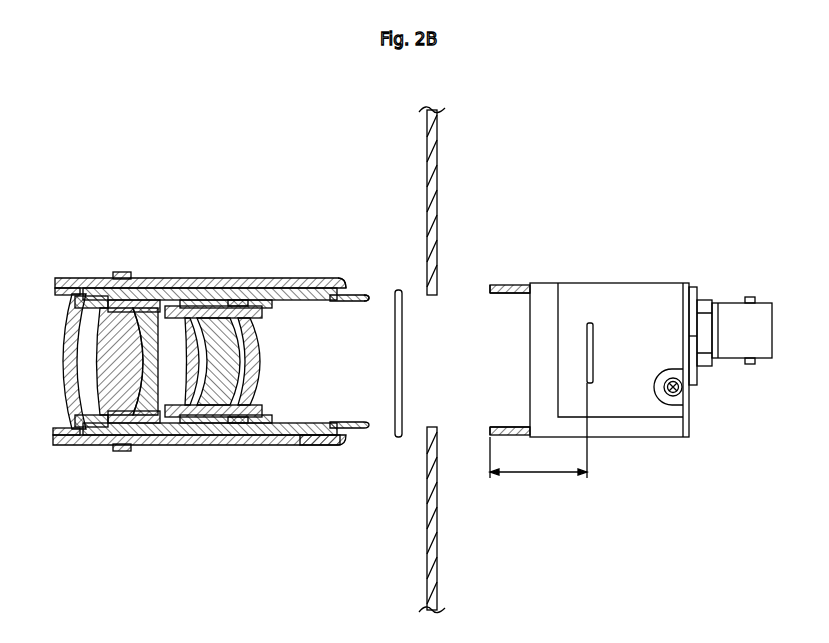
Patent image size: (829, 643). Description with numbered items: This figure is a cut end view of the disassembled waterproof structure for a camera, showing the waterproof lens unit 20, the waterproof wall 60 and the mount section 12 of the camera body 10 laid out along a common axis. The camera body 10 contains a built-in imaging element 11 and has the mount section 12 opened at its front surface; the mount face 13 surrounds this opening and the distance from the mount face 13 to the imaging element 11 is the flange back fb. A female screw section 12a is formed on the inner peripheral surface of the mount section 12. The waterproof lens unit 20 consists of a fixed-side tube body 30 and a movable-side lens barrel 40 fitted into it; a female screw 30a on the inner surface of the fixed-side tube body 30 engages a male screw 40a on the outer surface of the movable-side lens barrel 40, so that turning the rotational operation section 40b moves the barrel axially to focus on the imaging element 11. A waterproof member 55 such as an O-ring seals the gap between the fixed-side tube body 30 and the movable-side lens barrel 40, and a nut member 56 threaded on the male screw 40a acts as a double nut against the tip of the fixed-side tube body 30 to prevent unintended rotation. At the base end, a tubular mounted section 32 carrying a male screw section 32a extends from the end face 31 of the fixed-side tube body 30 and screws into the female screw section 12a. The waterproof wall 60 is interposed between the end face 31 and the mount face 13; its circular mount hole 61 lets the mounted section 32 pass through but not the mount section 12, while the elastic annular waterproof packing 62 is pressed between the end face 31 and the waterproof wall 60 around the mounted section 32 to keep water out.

The camera body 10 is at (636, 280).
The imaging element 11 is at (597, 353).
The mount section 12 is at (519, 289).
The female screw section 12a is at (518, 295).
The mount face 13 is at (490, 288).
The waterproof lens unit 20 is at (252, 270).
The fixed-side tube body 30 is at (186, 279).
The female screw 30a is at (315, 433).
The end face 31 is at (352, 286).
The mounted section 32 is at (350, 301).
The male screw section 32a is at (372, 292).
The movable-side lens barrel 40 is at (190, 445).
The male screw 40a is at (212, 445).
The rotational operation section 40b is at (95, 445).
The waterproof member 55 is at (236, 279).
The nut member 56 is at (122, 276).
The waterproof wall 60 is at (437, 150).
The mount hole 61 is at (433, 352).
The waterproof packing 62 is at (398, 438).
The flange back fb is at (538, 441).